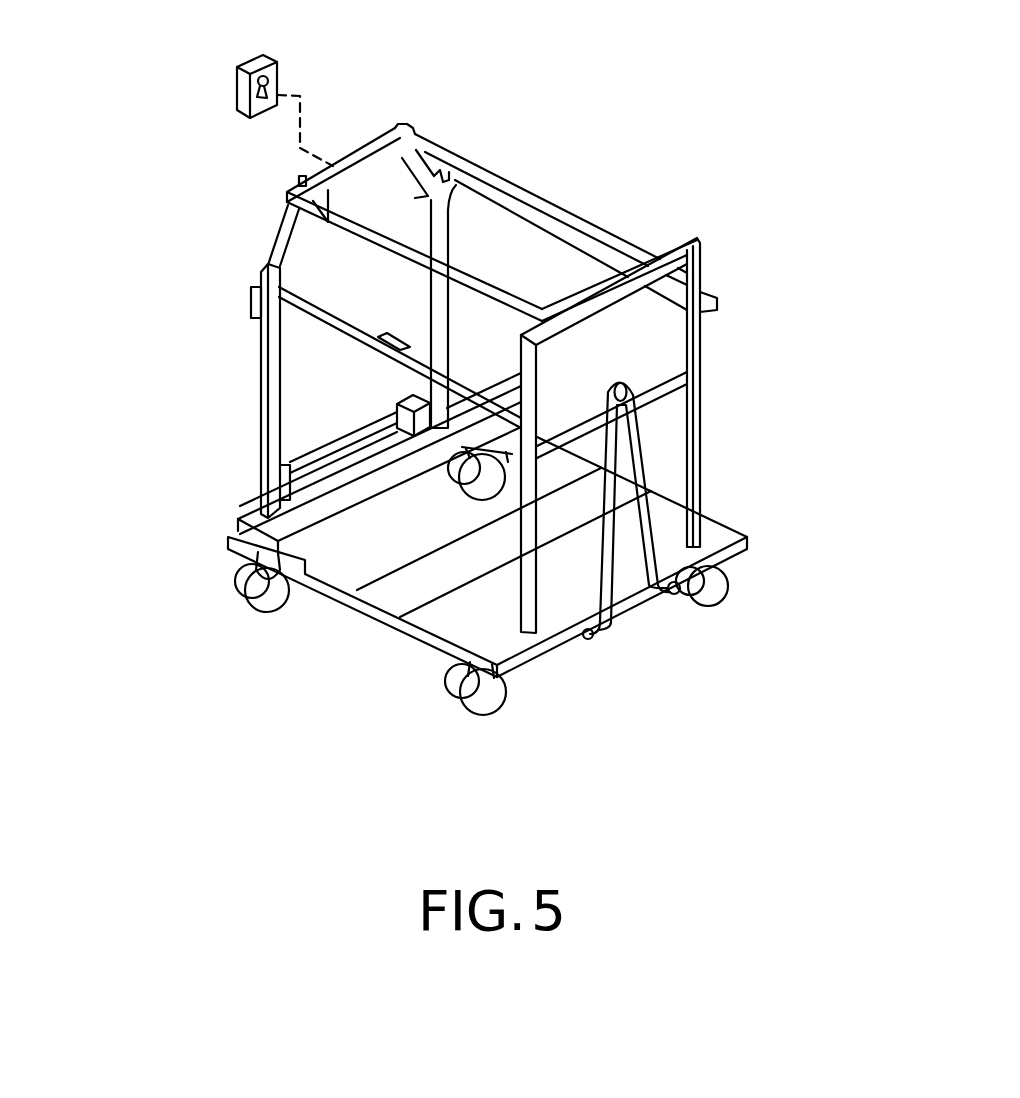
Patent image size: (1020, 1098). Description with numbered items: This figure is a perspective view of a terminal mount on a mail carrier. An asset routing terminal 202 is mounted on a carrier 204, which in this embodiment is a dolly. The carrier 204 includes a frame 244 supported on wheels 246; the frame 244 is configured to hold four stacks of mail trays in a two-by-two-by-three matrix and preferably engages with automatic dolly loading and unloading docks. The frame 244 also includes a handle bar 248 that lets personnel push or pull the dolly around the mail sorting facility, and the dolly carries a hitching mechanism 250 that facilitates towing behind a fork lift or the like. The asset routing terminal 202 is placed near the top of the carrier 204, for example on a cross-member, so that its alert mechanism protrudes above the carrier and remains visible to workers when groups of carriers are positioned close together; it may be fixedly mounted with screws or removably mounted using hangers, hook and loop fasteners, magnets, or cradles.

The asset routing terminal 202 is at (223, 86).
The carrier 204 is at (752, 245).
The frame 244 is at (261, 413).
The wheels 246 is at (240, 600).
The handle bar 248 is at (296, 245).
The hitching mechanism 250 is at (650, 441).